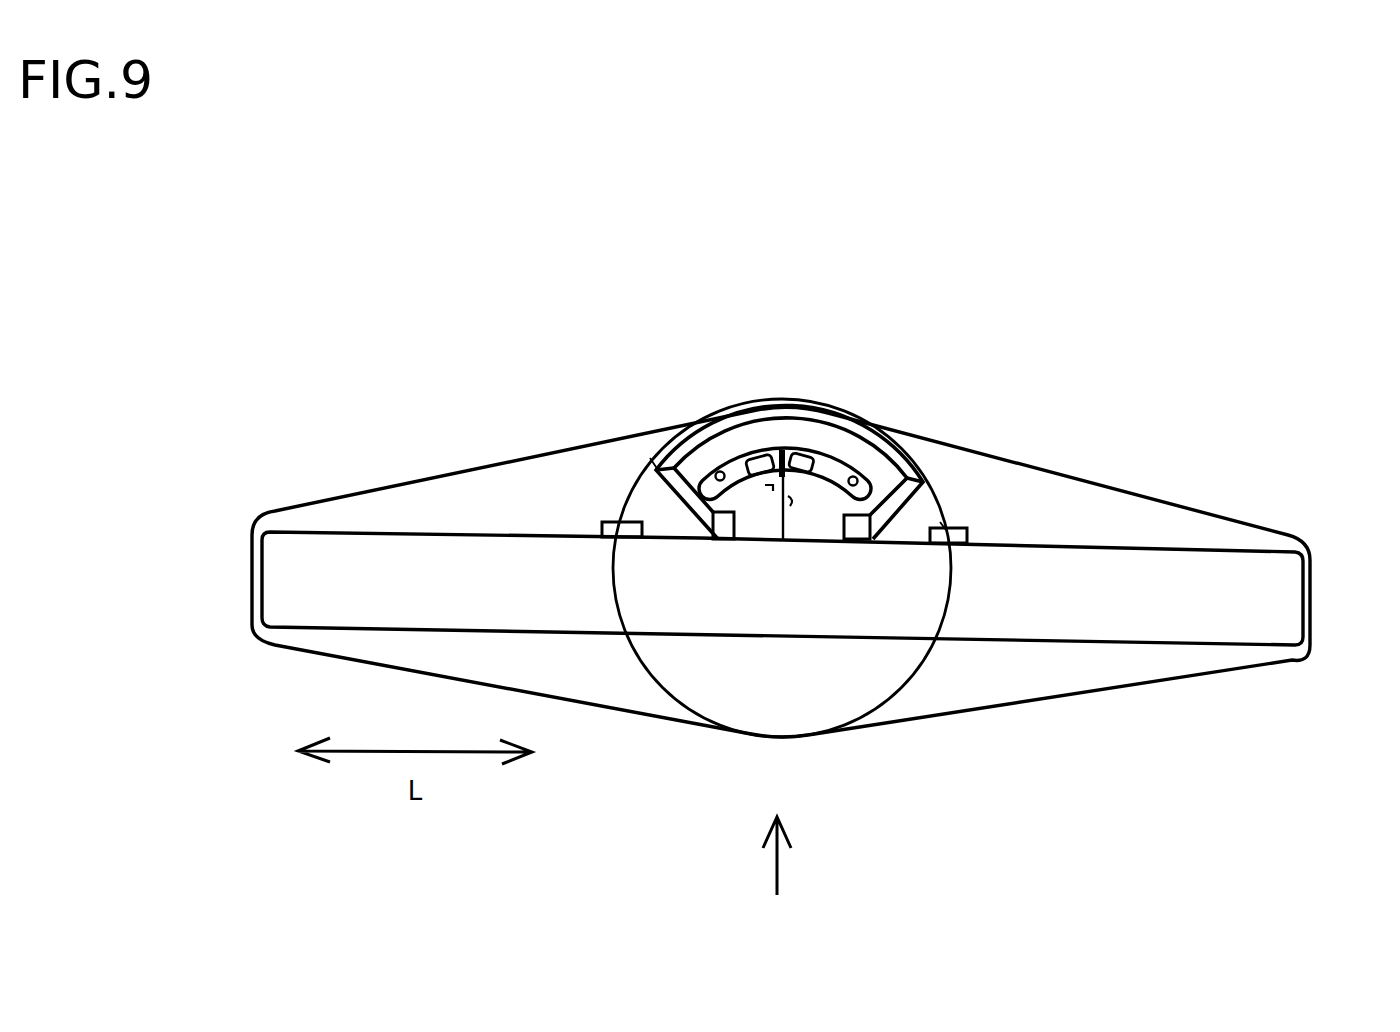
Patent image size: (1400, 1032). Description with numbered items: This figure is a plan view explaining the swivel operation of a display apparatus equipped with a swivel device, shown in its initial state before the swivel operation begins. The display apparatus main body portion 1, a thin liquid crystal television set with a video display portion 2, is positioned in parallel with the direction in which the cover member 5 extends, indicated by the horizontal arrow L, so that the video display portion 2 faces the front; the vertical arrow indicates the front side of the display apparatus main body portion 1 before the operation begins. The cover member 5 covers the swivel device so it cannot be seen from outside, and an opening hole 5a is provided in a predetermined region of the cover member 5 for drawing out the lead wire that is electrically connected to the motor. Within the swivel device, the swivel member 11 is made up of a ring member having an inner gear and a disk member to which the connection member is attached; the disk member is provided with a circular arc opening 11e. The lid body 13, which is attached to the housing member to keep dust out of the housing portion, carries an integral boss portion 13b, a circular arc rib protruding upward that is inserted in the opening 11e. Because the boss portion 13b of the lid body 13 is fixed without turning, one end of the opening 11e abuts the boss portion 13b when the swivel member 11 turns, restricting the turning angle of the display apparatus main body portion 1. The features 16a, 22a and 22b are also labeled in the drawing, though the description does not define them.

The display apparatus main body portion 1 is at (1280, 572).
The video display portion 2 is at (1047, 643).
The cover member 5 is at (1108, 500).
The opening hole 5a is at (787, 484).
The swivel member 11 is at (751, 428).
The circular arc opening 11e is at (717, 468).
The lid body 13 is at (870, 447).
The boss portion 13b is at (805, 447).
The coil terminal 16a is at (793, 446).
The lead wire 22a is at (657, 464).
The terminal block 22b is at (603, 520).